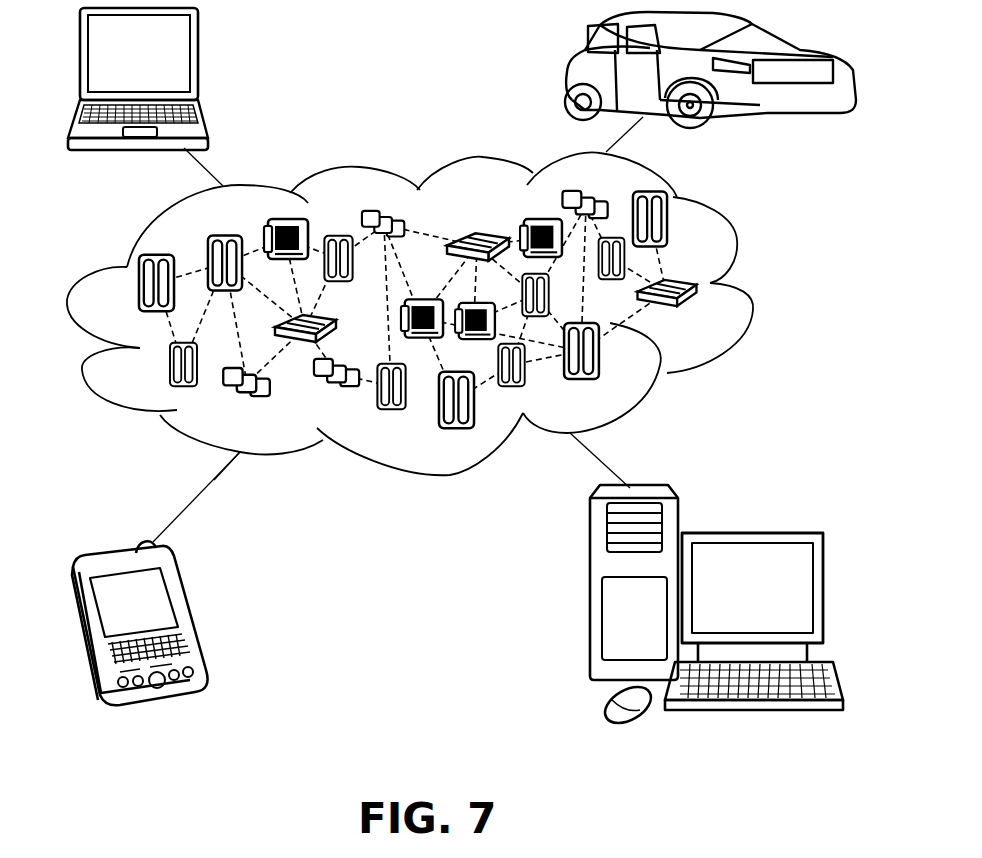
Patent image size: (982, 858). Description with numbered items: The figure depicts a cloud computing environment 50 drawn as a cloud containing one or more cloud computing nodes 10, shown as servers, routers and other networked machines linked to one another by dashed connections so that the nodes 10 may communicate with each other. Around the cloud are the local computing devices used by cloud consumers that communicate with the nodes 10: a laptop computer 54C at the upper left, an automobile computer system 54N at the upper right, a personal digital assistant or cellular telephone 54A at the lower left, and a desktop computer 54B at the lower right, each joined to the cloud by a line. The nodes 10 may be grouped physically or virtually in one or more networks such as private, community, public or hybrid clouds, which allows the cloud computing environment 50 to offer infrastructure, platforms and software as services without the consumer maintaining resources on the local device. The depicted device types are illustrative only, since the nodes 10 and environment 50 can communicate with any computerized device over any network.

The laptop computer 54C is at (198, 60).
The automobile computer system 54N is at (567, 72).
The personal digital assistant or cellular telephone 54A is at (188, 615).
The desktop computer 54B is at (750, 532).
The cloud computing environment 50 is at (753, 290).
The cloud computing nodes 10 is at (704, 318).